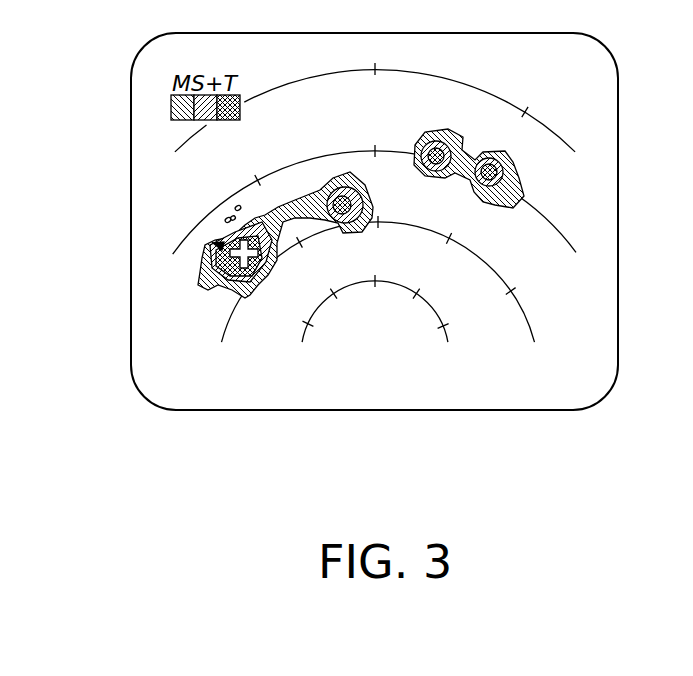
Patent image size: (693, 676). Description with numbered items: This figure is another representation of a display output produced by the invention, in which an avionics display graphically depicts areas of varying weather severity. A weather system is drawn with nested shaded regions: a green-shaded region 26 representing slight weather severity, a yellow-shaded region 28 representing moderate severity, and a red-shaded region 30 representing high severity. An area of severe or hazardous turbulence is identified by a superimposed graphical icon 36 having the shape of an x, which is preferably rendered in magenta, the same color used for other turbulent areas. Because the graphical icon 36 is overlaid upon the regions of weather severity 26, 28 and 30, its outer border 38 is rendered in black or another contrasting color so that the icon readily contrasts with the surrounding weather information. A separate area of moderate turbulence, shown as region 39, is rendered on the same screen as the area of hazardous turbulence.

The green-shaded region 26 is at (200, 292).
The yellow-shaded region 28 is at (253, 293).
The red-shaded region 30 is at (198, 257).
The graphical icon 36 is at (203, 243).
The outer border 38 is at (225, 233).
The region of moderate turbulence 39 is at (225, 206).